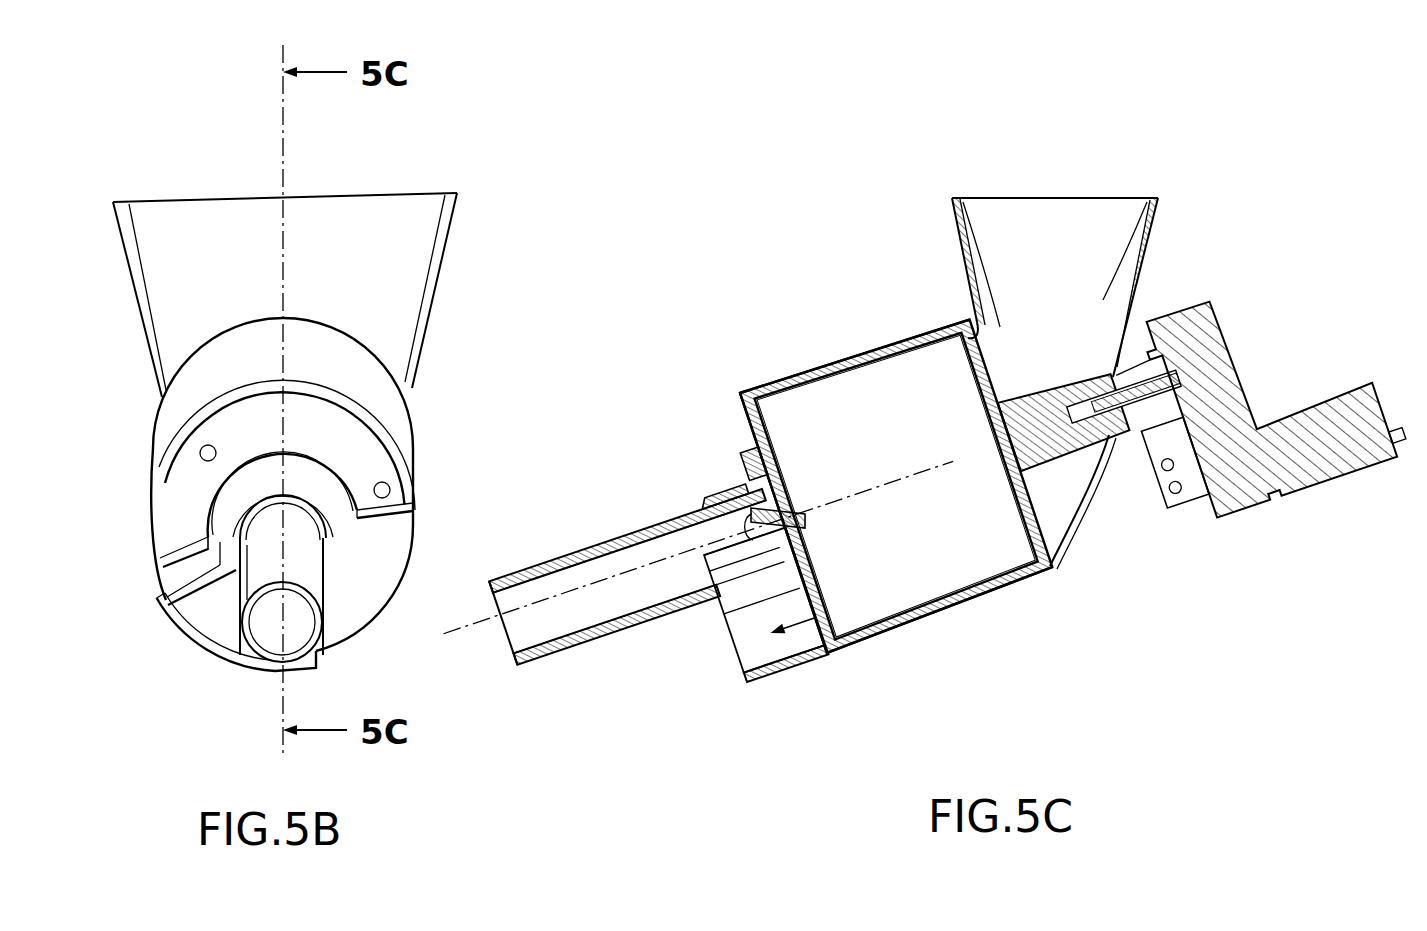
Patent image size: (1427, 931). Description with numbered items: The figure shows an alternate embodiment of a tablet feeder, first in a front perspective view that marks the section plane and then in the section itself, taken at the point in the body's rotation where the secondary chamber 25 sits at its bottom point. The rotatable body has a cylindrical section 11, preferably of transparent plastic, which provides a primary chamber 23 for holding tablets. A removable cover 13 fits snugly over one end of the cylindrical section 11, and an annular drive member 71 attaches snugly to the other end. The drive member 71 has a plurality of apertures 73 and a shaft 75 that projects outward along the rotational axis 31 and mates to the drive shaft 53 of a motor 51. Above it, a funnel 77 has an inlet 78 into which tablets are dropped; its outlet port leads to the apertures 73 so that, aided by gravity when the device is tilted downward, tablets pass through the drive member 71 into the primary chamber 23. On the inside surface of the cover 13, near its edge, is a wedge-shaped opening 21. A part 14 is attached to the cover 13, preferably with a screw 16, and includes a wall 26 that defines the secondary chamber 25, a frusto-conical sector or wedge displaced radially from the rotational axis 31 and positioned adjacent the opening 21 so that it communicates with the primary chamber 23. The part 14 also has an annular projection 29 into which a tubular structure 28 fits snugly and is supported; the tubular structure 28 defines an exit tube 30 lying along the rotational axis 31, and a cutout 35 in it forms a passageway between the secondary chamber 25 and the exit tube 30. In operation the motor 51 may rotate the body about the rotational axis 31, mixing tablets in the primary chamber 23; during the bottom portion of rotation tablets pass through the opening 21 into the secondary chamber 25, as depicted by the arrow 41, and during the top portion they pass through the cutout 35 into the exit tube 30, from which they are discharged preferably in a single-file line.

In FIG. 5B, the cylindrical section 11 is at (386, 413).
In FIG. 5C, the cylindrical section 11 is at (968, 595).
In FIG. 5B, the removable cover 13 is at (395, 492).
In FIG. 5C, the removable cover 13 is at (787, 658).
In FIG. 5B, the part 14 is at (180, 585).
In FIG. 5C, the part 14 is at (743, 453).
In FIG. 5C, the screw 16 is at (793, 510).
In FIG. 5C, the wedge-shaped opening 21 is at (848, 643).
In FIG. 5C, the primary chamber 23 is at (858, 387).
In FIG. 5C, the secondary chamber 25 is at (755, 642).
In FIG. 5B, the wall 26 is at (215, 628).
In FIG. 5C, the wall 26 is at (730, 637).
In FIG. 5B, the tubular structure 28 is at (310, 572).
In FIG. 5C, the tubular structure 28 is at (603, 543).
In FIG. 5C, the annular projection 29 is at (713, 495).
In FIG. 5B, the exit tube 30 is at (248, 640).
In FIG. 5C, the exit tube 30 is at (525, 593).
In FIG. 5C, the rotational axis 31 is at (470, 633).
In FIG. 5C, the cutout 35 is at (738, 568).
In FIG. 5C, the arrow 41 is at (878, 568).
In FIG. 5C, the motor 51 is at (1257, 510).
In FIG. 5C, the drive shaft 53 is at (1115, 402).
In FIG. 5C, the annular drive member 71 is at (1052, 568).
In FIG. 5C, the apertures 73 is at (968, 363).
In FIG. 5C, the shaft 75 is at (1028, 417).
In FIG. 5B, the funnel 77 is at (447, 240).
In FIG. 5C, the funnel 77 is at (1148, 252).
In FIG. 5B, the inlet 78 is at (376, 172).
In FIG. 5C, the inlet 78 is at (1068, 184).